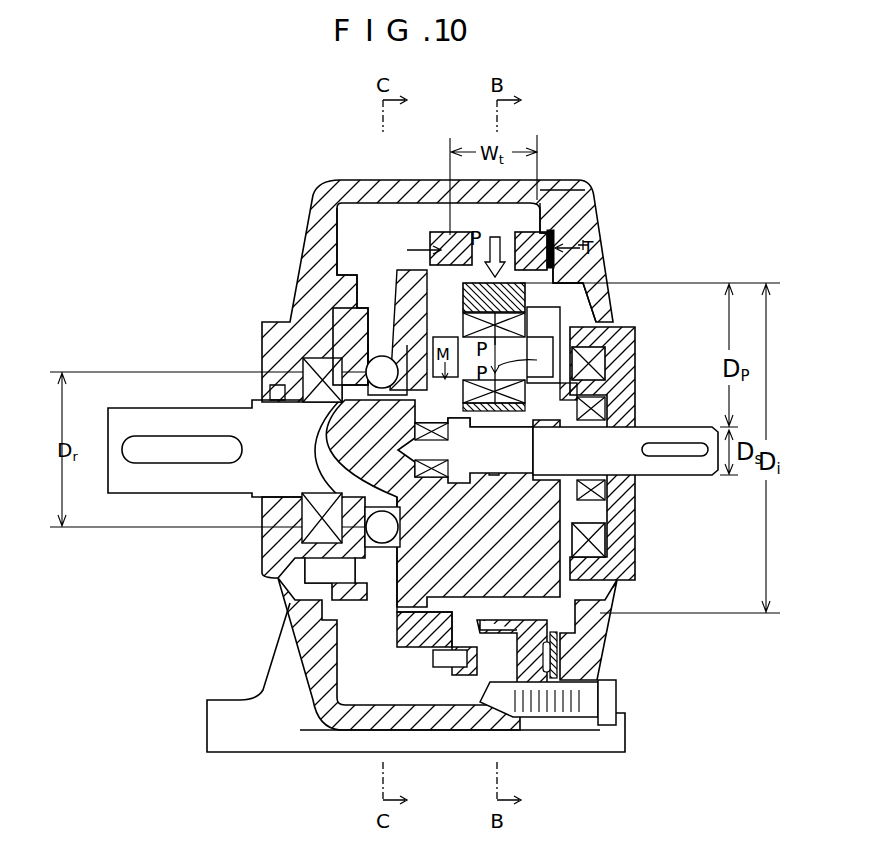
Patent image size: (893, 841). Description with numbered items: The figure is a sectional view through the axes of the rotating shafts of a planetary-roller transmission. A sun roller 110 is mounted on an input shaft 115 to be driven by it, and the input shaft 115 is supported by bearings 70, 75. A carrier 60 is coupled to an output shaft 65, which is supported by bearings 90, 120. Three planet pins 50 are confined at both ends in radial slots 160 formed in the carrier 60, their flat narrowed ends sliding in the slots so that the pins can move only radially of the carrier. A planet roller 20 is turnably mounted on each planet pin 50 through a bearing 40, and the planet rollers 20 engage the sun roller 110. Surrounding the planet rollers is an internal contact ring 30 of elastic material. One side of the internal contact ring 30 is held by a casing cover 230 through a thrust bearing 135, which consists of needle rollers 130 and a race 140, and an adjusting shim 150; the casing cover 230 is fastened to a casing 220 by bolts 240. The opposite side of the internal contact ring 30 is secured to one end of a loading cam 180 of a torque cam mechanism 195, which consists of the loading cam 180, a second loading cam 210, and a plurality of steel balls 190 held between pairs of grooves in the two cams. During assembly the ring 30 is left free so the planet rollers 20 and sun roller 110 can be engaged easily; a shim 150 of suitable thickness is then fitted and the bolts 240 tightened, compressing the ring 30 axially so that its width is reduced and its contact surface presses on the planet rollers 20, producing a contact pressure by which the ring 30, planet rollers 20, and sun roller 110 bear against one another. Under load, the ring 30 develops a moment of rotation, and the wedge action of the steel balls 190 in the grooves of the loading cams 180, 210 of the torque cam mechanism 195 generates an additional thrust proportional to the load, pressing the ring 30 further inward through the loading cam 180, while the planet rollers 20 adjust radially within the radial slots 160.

The planet roller 20 is at (523, 297).
The internal contact ring 30 is at (530, 230).
The bearing 40 is at (605, 373).
The planet pin 50 is at (550, 368).
The carrier 60 is at (555, 590).
The output shaft 65 is at (138, 480).
The bearing 70 is at (593, 503).
The bearing 75 is at (347, 493).
The bearing 90 is at (613, 543).
The sun roller 110 is at (587, 452).
The input shaft 115 is at (705, 433).
The bearing 120 is at (293, 387).
The needle rollers 130 is at (550, 235).
The thrust bearing 135 is at (555, 658).
The race 140 is at (556, 225).
The adjusting shim 150 is at (553, 273).
The radial slot 160 is at (410, 238).
The loading cam 180 is at (385, 355).
The steel ball 190 is at (333, 213).
The torque cam mechanism 195 is at (383, 557).
The loading cam 210 is at (347, 352).
The casing 220 is at (332, 703).
The casing cover 230 is at (578, 730).
The bolt 240 is at (610, 703).